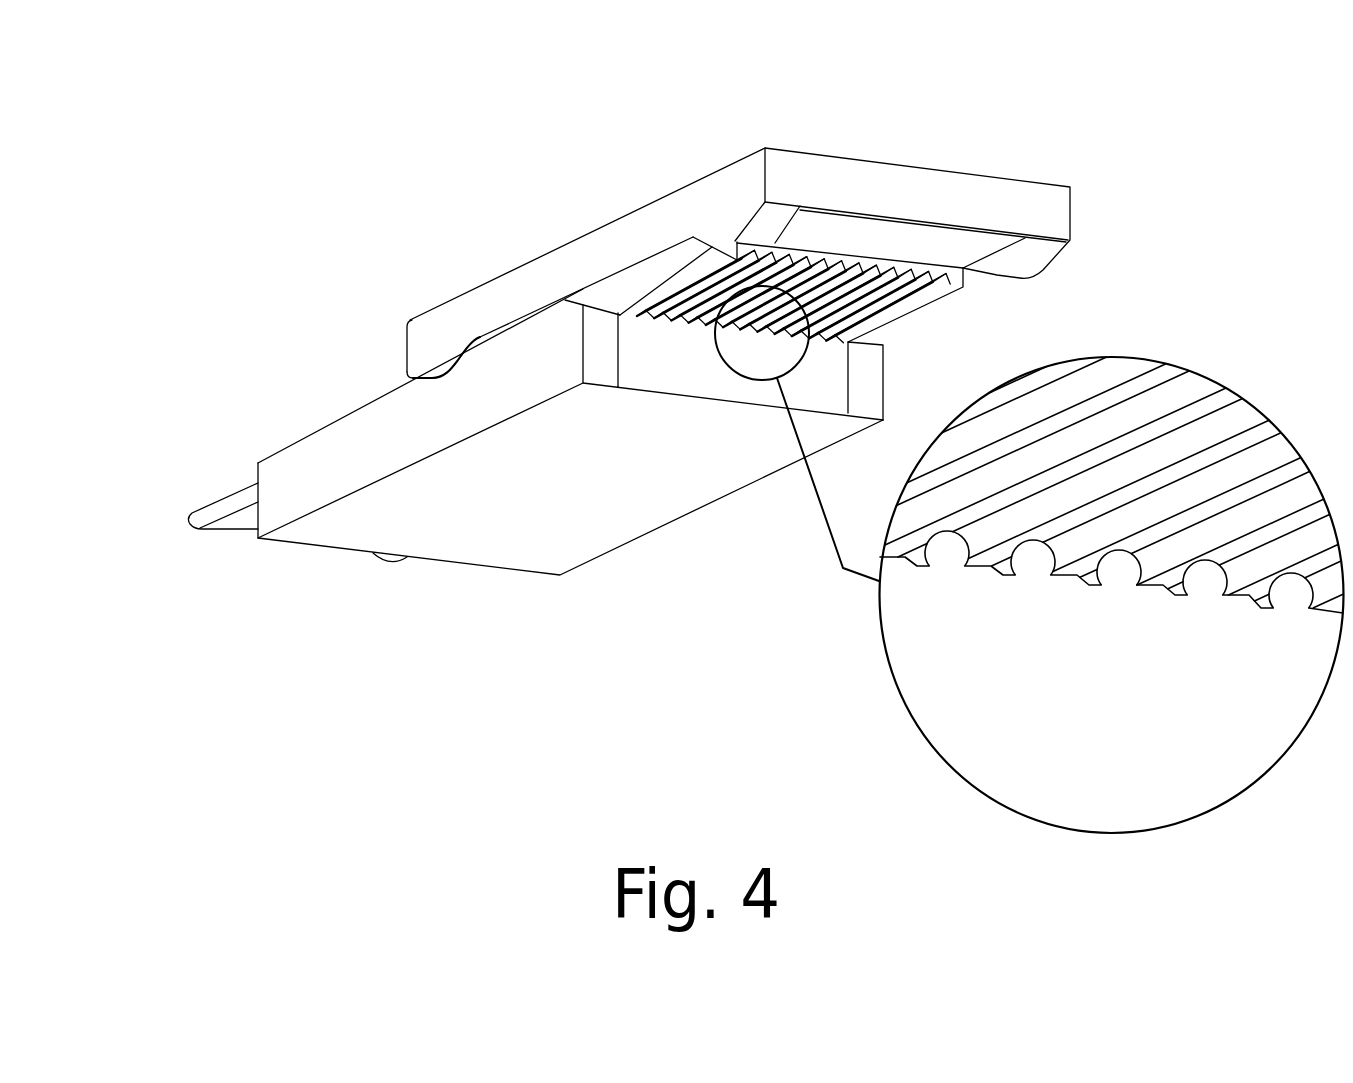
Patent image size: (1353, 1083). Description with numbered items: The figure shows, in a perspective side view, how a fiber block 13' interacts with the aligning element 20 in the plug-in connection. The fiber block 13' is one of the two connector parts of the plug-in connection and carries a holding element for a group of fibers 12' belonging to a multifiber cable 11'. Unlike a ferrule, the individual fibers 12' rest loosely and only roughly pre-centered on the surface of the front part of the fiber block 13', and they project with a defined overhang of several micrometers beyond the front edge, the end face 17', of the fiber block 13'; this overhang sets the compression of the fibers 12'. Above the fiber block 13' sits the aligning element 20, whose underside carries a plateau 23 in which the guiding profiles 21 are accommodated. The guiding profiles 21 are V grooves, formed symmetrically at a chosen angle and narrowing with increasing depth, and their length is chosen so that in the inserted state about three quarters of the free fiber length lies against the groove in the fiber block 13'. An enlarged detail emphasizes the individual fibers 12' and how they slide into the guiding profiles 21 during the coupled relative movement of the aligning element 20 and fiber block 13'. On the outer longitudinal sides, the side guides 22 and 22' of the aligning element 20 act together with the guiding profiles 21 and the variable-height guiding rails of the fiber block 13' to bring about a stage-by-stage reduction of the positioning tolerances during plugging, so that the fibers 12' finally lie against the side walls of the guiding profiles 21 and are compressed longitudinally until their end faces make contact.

The aligning element 20 is at (776, 128).
The side guide 22 is at (647, 189).
The plateau 23 is at (638, 286).
The side guide 22' is at (337, 317).
The guiding profiles 21 is at (880, 313).
The end face 17' is at (733, 460).
The fiber block 13' is at (570, 483).
The multifiber cable 11' is at (156, 535).
The fibers 12' is at (1111, 560).